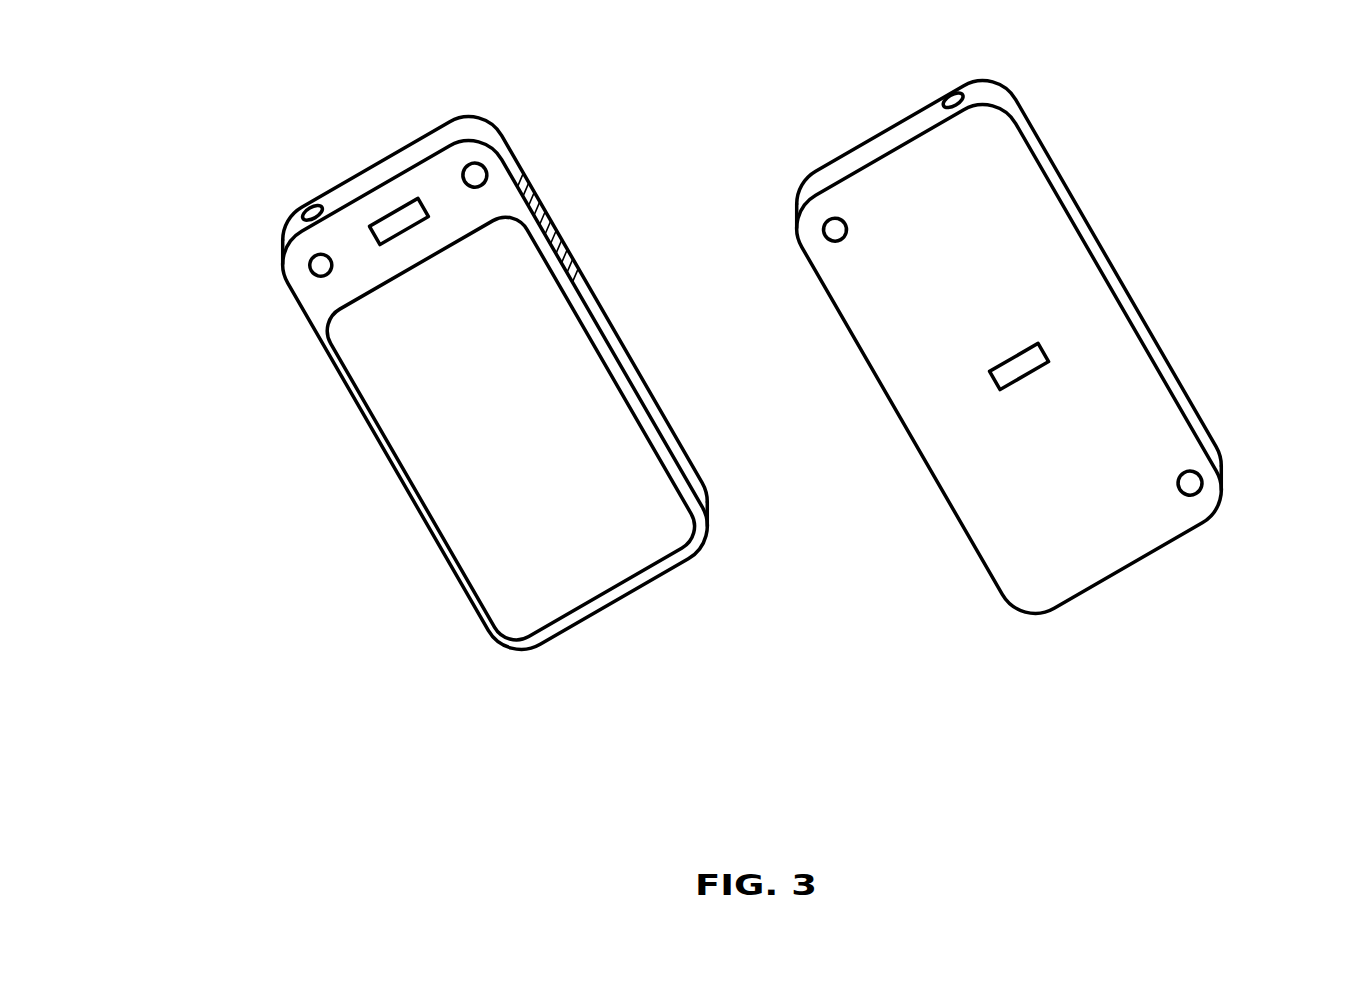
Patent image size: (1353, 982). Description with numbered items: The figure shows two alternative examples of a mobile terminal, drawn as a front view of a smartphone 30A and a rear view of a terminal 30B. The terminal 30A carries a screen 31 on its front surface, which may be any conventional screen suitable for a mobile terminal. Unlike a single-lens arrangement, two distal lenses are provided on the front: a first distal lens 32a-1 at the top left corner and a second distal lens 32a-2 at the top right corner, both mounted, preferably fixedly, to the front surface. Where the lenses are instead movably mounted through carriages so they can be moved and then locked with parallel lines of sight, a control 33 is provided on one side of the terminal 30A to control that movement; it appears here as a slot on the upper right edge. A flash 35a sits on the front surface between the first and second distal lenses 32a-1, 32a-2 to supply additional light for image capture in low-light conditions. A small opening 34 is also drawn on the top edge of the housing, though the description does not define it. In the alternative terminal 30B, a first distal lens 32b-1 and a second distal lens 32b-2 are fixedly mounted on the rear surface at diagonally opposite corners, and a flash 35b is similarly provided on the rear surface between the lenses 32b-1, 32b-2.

The smartphone 30A is at (342, 104).
The terminal 30B is at (828, 91).
The screen 31 is at (511, 428).
The first distal lens 32a-1 is at (312, 270).
The second distal lens 32a-2 is at (470, 177).
The first distal lens 32b-1 is at (835, 243).
The second distal lens 32b-2 is at (1202, 497).
The control 33 is at (548, 195).
The side hole 34 is at (958, 92).
The flash 35a is at (377, 242).
The flash 35b is at (1048, 350).